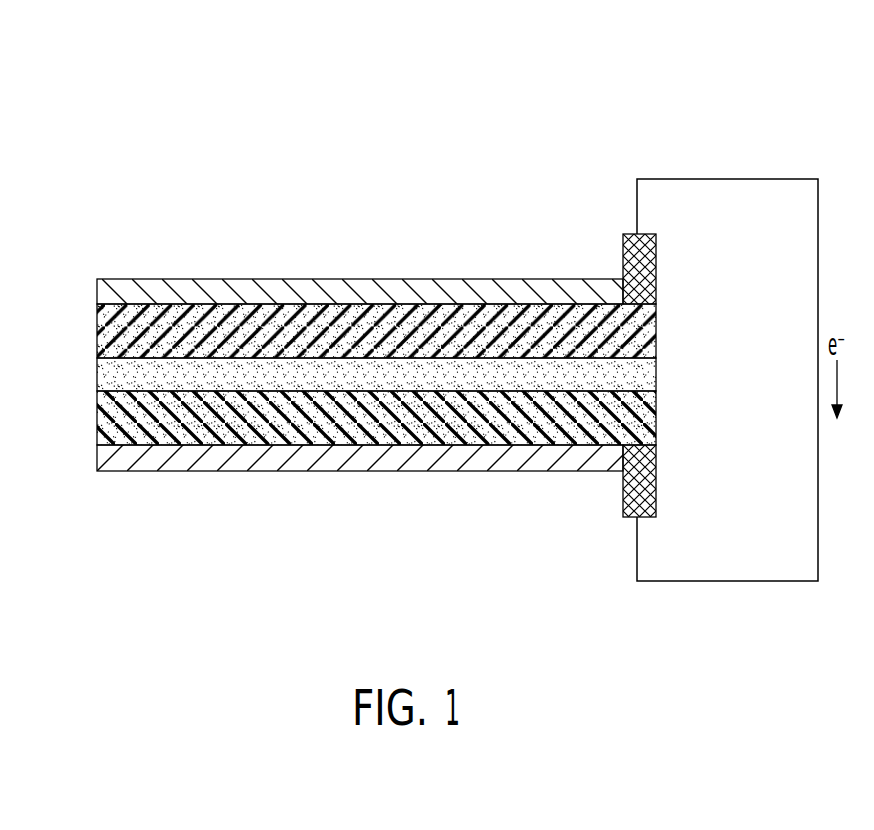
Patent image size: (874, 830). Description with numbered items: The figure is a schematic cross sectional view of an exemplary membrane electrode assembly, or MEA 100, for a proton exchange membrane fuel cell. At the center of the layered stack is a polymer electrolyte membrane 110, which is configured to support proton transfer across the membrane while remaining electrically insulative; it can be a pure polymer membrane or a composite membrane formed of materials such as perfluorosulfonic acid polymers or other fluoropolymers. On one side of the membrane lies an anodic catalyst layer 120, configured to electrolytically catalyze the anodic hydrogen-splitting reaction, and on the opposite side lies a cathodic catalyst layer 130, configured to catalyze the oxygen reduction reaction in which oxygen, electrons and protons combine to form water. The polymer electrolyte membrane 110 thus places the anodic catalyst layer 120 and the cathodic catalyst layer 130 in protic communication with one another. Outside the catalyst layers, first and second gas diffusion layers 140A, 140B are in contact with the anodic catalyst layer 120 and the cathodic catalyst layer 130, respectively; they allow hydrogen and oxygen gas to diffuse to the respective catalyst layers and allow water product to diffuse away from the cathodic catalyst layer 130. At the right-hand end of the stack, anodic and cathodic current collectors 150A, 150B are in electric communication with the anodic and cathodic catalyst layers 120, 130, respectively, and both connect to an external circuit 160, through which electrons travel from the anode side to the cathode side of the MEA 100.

The membrane electrode assembly 100 is at (97, 94).
The polymer electrolyte membrane 110 is at (97, 377).
The anodic catalyst layer 120 is at (97, 332).
The cathodic catalyst layer 130 is at (97, 420).
The first gas diffusion layer 140A is at (133, 290).
The second gas diffusion layer 140B is at (137, 462).
The anodic current collector 150A is at (625, 234).
The cathodic current collector 150B is at (630, 517).
The external circuit 160 is at (727, 179).